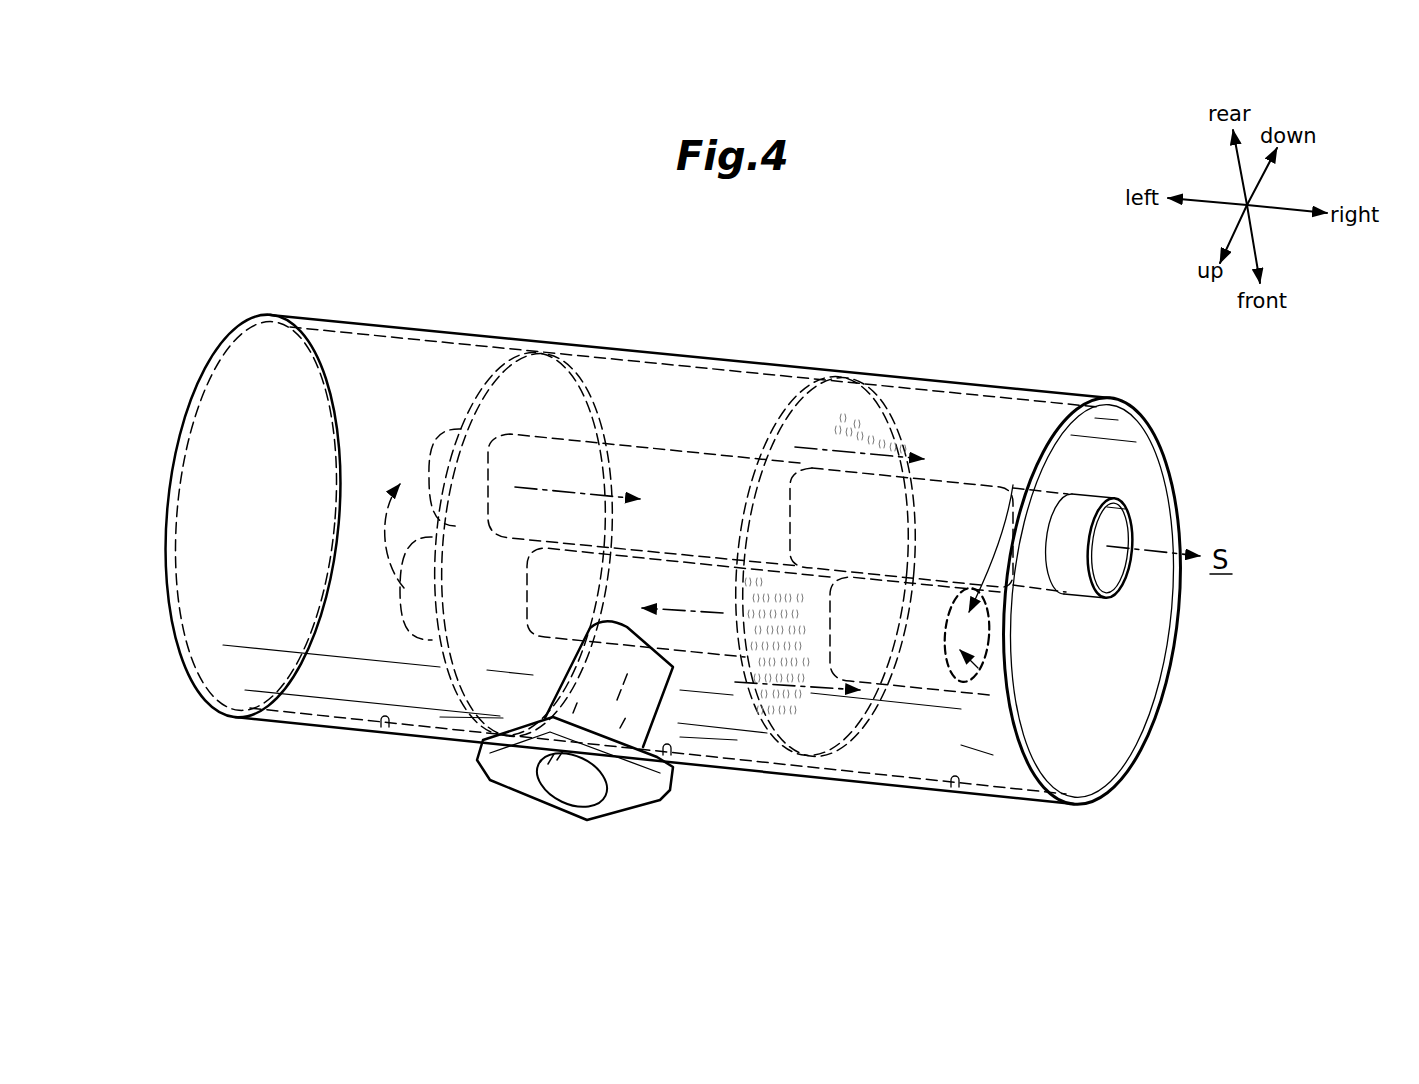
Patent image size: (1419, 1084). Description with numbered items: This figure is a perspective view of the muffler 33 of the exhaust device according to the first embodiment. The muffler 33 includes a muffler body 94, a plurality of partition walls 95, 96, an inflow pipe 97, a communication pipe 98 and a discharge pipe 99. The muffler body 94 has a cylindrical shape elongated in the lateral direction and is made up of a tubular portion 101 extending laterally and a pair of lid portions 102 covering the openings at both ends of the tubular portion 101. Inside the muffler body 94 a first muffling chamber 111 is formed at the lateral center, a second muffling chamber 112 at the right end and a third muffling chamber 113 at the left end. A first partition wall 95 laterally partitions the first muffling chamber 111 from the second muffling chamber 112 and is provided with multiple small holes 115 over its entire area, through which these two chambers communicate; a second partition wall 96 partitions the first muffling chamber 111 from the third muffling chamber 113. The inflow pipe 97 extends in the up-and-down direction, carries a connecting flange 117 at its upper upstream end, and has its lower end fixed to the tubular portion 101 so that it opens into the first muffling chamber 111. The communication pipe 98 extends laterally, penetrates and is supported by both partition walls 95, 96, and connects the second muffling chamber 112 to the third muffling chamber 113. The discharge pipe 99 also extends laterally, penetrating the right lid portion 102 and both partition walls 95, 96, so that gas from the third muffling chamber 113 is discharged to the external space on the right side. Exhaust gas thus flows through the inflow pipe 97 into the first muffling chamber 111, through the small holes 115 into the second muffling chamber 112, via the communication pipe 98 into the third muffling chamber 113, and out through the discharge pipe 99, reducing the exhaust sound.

The muffler 33 is at (1058, 328).
The muffler body 94 is at (992, 367).
The tubular portion 101 is at (690, 355).
The lid portion 102 is at (205, 600).
The second partition wall 96 is at (490, 378).
The first partition wall 95 is at (790, 408).
The first muffling chamber 111 is at (653, 405).
The communication pipe 98 is at (908, 677).
The third muffling chamber 113 is at (386, 385).
The second muffling chamber 112 is at (913, 417).
The small holes 115 is at (868, 430).
The discharge pipe 99 is at (1135, 527).
The connecting flange 117 is at (567, 813).
The inflow pipe 97 is at (673, 710).